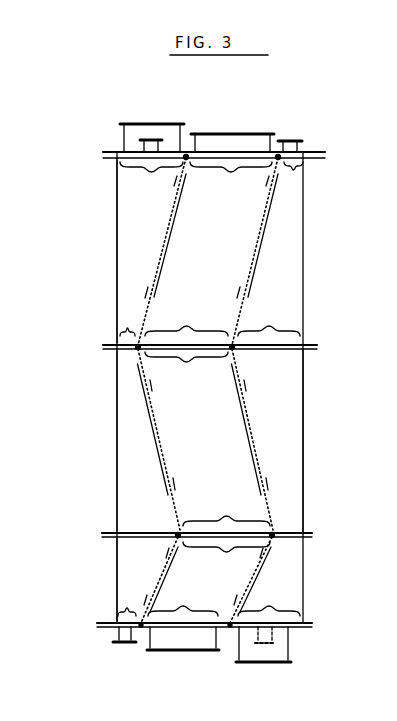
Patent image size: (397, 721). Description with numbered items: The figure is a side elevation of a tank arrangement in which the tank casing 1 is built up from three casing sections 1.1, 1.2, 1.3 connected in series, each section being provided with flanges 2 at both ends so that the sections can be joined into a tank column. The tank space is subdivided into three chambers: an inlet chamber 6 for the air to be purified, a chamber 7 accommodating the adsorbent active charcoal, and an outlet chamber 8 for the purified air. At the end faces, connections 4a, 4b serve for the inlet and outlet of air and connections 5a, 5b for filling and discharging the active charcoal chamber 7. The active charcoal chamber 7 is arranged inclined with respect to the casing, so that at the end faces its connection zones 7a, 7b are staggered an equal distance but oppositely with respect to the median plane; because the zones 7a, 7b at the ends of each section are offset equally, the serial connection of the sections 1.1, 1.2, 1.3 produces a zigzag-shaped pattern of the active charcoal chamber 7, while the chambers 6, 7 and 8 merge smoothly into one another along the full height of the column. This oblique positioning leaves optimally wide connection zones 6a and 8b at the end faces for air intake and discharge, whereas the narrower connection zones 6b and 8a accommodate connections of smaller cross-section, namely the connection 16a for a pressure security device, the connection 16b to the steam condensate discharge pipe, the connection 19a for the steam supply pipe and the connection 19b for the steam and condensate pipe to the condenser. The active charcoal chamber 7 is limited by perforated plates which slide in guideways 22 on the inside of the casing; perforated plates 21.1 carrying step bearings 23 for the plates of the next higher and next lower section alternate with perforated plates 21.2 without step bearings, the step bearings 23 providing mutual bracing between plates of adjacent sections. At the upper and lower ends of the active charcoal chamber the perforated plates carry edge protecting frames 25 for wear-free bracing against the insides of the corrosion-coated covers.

The tank casing 1 is at (90, 246).
The casing section 1.1 is at (117, 288).
The casing section 1.2 is at (117, 455).
The casing section 1.3 is at (117, 577).
The flange 2 is at (105, 152).
The connection for inlet and outlet of air 4a is at (123, 150).
The connection for inlet and outlet of air 4b is at (280, 652).
The connection for filling and discharging the active charcoal chamber 5a is at (233, 140).
The connection for filling and discharging the active charcoal chamber 5b is at (188, 650).
The inlet chamber 6 is at (130, 482).
The connection zone 6a is at (151, 177).
The connection zone 6b is at (127, 330).
The active charcoal chamber 7 is at (235, 432).
The connection zone 7a is at (208, 365).
The connection zone 7b is at (207, 462).
The outlet chamber 8 is at (290, 455).
The connection zone 8a is at (293, 171).
The connection zone 8b is at (269, 462).
The connection for a pressure security device 16a is at (147, 138).
The connection to the discharge pipe for steam condensate 16b is at (268, 637).
The connection for the steam supply pipe 19a is at (290, 150).
The connection for a steam and condensate pipe 19b is at (115, 632).
The perforated plate 21.1 is at (242, 308).
The perforated plate 21.2 is at (172, 218).
The guideway 22 is at (150, 398).
The step bearing 23 is at (234, 350).
The edge protecting frame 25 is at (273, 156).